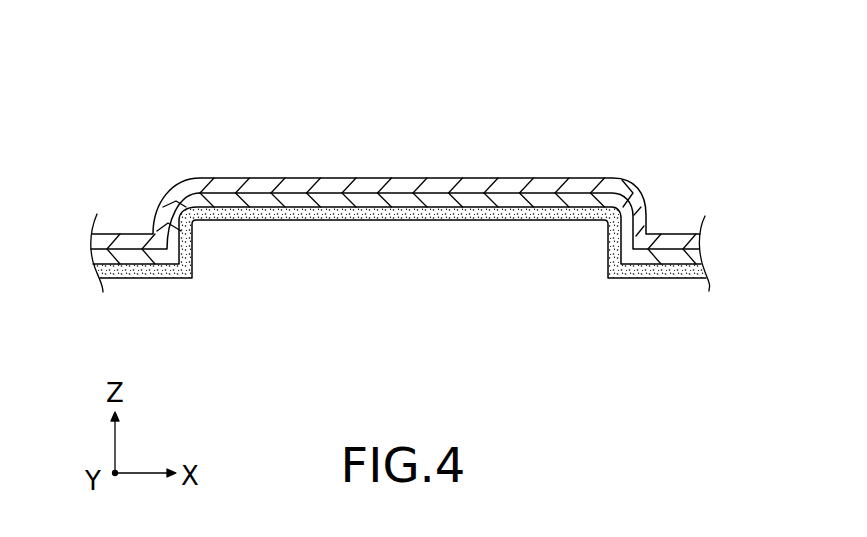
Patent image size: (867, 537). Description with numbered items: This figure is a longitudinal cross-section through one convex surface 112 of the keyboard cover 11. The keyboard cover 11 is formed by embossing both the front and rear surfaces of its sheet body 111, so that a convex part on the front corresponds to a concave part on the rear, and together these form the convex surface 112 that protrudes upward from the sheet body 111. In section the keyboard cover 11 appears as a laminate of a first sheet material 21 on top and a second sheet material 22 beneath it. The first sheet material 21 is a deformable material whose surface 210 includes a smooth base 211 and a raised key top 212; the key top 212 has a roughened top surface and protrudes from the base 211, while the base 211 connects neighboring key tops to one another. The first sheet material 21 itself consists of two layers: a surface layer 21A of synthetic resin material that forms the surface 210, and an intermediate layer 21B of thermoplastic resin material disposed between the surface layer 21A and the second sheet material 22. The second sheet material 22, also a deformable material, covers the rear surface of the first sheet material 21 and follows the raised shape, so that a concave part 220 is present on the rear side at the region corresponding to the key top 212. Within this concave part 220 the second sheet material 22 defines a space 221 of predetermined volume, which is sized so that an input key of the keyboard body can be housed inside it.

The keyboard cover 11 is at (602, 95).
The sheet body 111 is at (677, 234).
The convex surface 112 is at (615, 178).
The first sheet material 21 is at (397, 85).
The surface layer 21A is at (285, 178).
The intermediate layer 21B is at (355, 200).
The surface 210 is at (93, 127).
The base 211 is at (121, 234).
The key top 212 is at (193, 178).
The second sheet material 22 is at (399, 262).
The concave part 220 is at (513, 221).
The space 221 is at (415, 243).